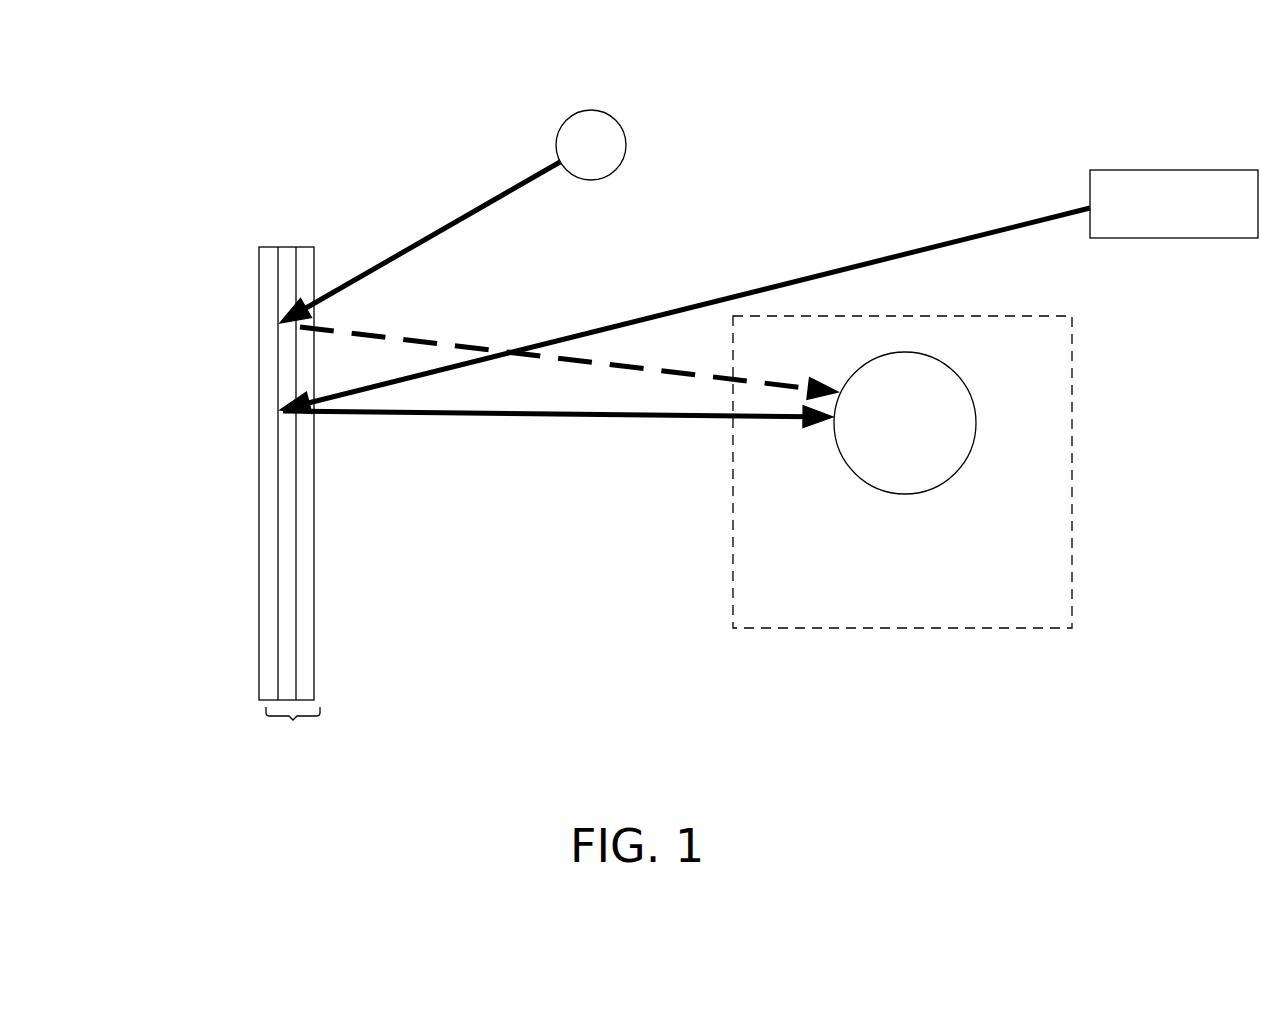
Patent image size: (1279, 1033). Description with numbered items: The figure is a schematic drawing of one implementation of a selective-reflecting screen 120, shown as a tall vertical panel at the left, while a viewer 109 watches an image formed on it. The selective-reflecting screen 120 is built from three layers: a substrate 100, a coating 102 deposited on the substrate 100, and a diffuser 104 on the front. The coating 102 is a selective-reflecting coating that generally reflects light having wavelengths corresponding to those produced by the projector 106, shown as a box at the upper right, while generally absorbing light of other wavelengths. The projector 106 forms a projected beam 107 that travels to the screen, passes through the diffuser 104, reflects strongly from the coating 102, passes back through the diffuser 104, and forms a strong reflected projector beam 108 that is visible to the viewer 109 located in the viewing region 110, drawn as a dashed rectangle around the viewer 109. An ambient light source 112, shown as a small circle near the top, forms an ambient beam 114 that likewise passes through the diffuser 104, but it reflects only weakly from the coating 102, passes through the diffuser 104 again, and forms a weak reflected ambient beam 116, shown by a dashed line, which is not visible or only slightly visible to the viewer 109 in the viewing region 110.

The substrate 100 is at (270, 247).
The coating 102 is at (285, 247).
The diffuser 104 is at (302, 247).
The projector 106 is at (1176, 170).
The projected beam 107 is at (800, 272).
The strong reflected projector beam 108 is at (557, 417).
The viewer 109 is at (903, 495).
The viewing region 110 is at (852, 630).
The ambient light source 112 is at (590, 110).
The ambient beam 114 is at (447, 225).
The weak reflected ambient beam 116 is at (410, 333).
The selective-reflecting screen 120 is at (293, 720).